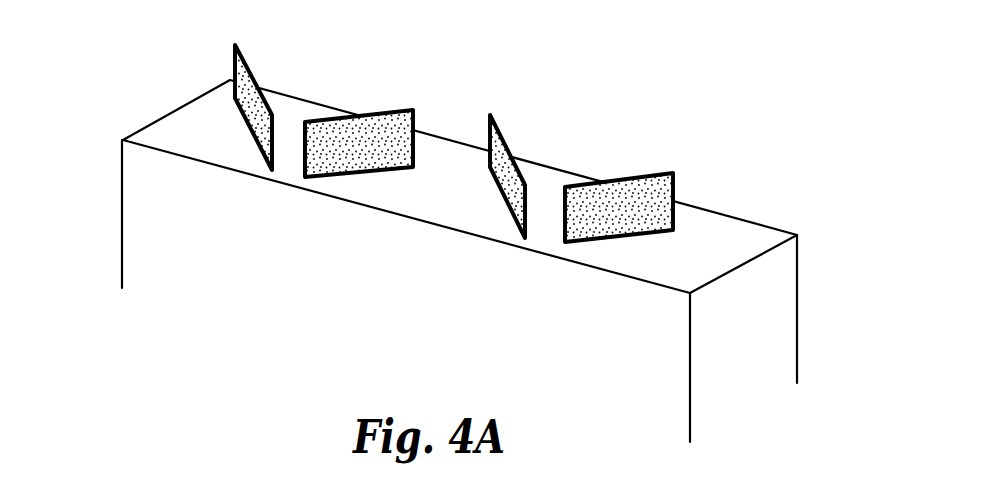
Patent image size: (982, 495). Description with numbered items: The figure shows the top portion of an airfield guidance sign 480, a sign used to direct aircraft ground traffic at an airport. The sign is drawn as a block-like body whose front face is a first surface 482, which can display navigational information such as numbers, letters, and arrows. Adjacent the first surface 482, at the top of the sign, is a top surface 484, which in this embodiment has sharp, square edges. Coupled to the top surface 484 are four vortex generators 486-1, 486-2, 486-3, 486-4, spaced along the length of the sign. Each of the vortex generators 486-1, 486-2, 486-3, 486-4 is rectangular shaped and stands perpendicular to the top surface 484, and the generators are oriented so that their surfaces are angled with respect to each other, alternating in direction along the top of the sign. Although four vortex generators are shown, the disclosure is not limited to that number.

The airfield guidance sign 480 is at (135, 62).
The first surface 482 is at (197, 238).
The top surface 484 is at (713, 242).
The vortex generator 486-1 is at (640, 177).
The vortex generator 486-2 is at (512, 155).
The vortex generator 486-3 is at (385, 110).
The vortex generator 486-4 is at (255, 82).